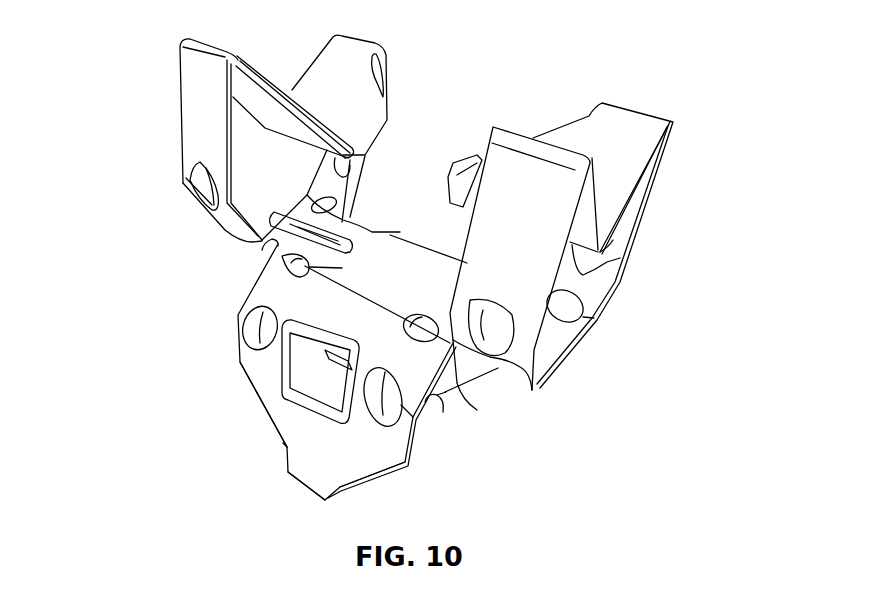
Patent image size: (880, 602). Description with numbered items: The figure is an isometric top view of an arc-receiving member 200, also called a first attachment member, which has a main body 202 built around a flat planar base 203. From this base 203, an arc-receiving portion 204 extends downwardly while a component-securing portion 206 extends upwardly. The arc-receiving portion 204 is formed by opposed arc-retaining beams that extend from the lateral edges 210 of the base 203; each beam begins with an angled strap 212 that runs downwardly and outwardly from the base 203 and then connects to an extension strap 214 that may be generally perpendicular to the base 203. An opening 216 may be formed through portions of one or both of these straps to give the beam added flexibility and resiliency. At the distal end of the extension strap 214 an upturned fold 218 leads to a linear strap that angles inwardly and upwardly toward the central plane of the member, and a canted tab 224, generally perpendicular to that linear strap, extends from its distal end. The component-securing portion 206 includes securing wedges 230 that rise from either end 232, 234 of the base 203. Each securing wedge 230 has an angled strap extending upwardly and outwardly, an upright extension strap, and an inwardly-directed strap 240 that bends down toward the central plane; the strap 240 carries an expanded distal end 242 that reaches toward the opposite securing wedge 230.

The arc-receiving member 200 is at (136, 128).
The main body 202 is at (250, 275).
The planar base 203 is at (388, 250).
The arc-receiving portion 204 is at (253, 388).
The component-securing portion 206 is at (686, 112).
The lateral edges 210 is at (238, 317).
The angled strap 212 is at (437, 410).
The extension strap 214 is at (280, 413).
The opening 216 is at (310, 370).
The upturned fold 218 is at (359, 463).
The canted tab 224 is at (340, 342).
The securing wedge 230 is at (386, 34).
The end of the base 232 is at (260, 250).
The end of the base 234 is at (457, 343).
The inwardly-directed strap 240 is at (258, 73).
The expanded distal end 242 is at (300, 123).